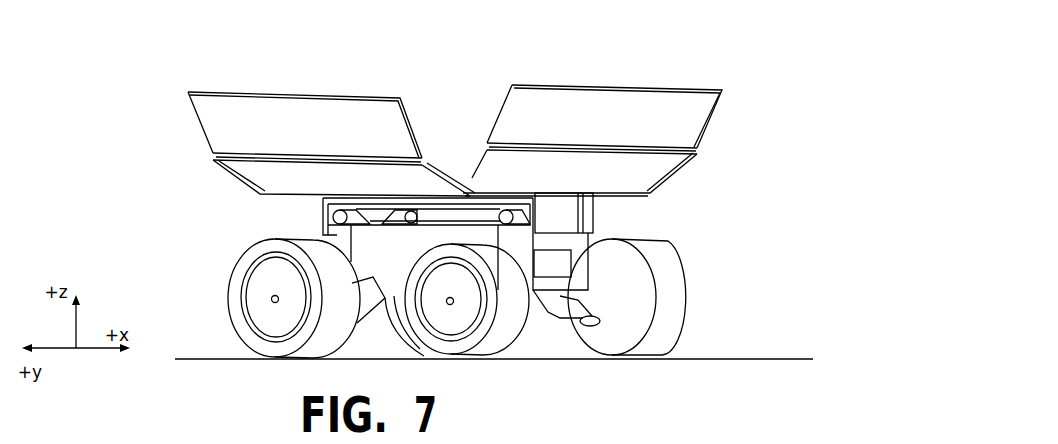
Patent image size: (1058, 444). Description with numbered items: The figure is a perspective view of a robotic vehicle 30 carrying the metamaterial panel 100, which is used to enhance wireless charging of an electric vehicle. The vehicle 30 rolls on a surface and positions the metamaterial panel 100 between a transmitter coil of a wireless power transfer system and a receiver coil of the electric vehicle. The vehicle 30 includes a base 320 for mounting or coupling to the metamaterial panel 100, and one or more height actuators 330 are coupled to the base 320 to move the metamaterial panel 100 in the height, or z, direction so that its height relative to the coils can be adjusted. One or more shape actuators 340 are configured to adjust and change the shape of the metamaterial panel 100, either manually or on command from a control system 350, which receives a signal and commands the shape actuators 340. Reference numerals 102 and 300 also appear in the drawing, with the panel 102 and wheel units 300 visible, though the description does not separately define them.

The vehicle 30 is at (775, 62).
The metamaterial panel 100 is at (645, 76).
The container 102 is at (473, 170).
The wheel assembly 300 is at (228, 305).
The base 320 is at (253, 188).
The height actuator 330 is at (322, 235).
The shape actuator 340 is at (212, 155).
The control system 350 is at (588, 263).